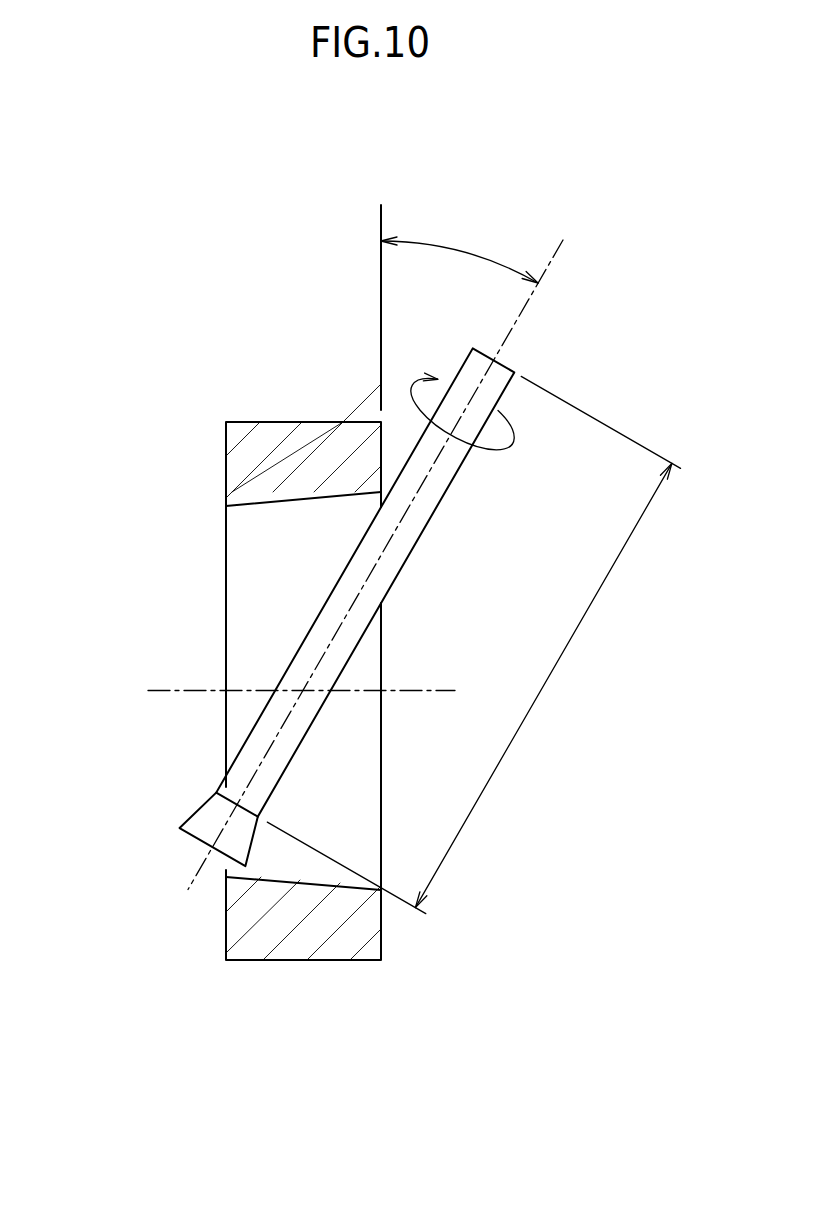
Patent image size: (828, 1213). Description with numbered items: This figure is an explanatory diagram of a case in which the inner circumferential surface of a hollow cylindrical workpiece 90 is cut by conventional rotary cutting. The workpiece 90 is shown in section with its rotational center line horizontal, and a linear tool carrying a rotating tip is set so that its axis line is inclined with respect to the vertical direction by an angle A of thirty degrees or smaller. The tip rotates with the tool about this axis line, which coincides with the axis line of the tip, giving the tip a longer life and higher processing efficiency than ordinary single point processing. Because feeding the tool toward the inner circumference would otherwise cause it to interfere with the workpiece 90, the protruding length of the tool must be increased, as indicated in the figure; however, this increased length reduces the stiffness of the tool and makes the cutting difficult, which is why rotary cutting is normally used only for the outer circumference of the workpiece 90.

The workpiece 90 is at (288, 962).
The inclination angle A is at (459, 247).